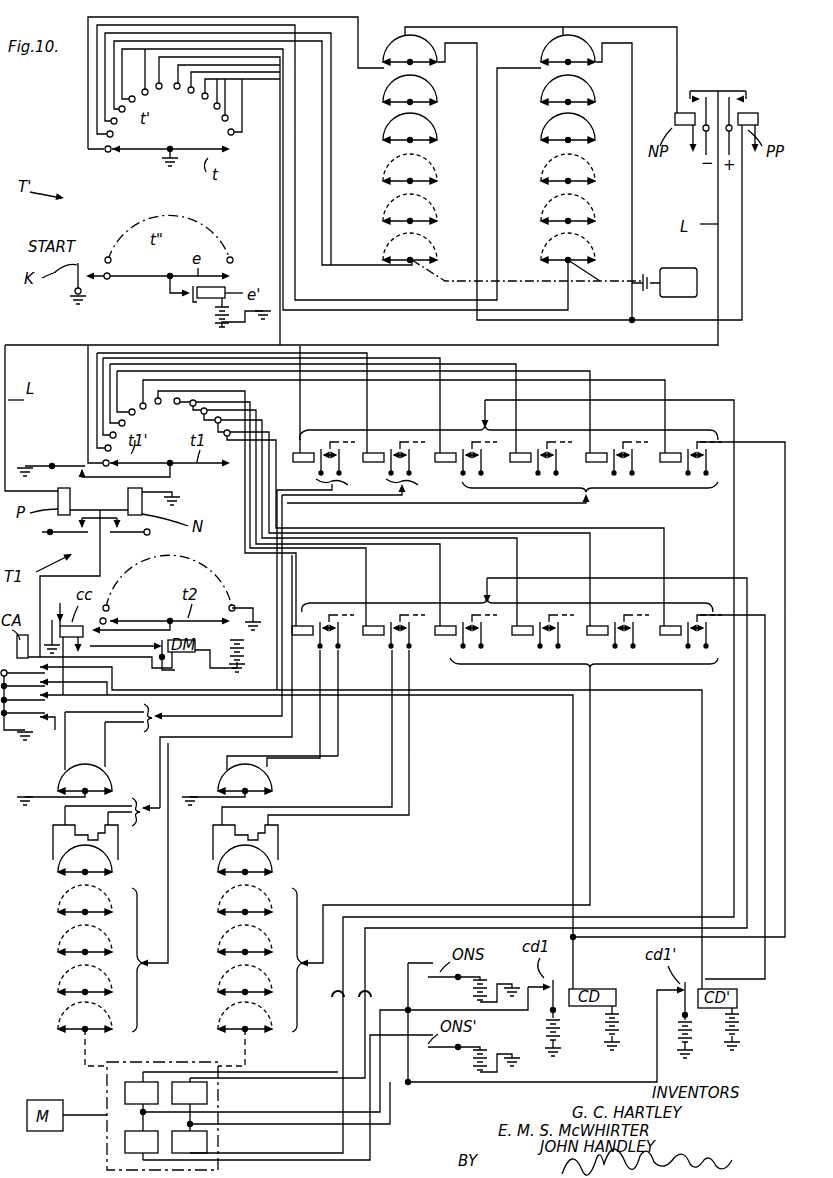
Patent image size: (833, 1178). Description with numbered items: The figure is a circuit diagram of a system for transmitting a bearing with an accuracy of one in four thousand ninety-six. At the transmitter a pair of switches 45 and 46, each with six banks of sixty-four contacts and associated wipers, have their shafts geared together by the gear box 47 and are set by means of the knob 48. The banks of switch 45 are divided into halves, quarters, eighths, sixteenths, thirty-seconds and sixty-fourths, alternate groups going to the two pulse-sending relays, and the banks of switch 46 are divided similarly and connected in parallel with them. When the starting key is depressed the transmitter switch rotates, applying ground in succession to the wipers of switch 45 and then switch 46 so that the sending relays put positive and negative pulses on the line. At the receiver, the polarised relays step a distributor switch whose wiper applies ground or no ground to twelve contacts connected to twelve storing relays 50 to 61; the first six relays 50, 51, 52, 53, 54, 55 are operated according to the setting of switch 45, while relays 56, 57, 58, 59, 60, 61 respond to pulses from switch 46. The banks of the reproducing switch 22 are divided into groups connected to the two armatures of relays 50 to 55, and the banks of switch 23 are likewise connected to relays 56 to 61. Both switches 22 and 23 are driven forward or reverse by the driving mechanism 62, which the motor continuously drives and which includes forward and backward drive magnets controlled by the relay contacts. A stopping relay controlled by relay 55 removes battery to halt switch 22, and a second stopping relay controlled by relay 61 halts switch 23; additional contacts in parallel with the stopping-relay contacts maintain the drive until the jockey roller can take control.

The switch 22 is at (54, 939).
The switch 23 is at (222, 951).
The switch 45 is at (376, 160).
The switch 46 is at (542, 172).
The gear box 47 is at (676, 270).
The knob 48 is at (646, 270).
The storing relay 50 is at (300, 462).
The storing relay 51 is at (370, 462).
The storing relay 52 is at (442, 462).
The storing relay 53 is at (517, 462).
The storing relay 54 is at (593, 462).
The storing relay 55 is at (667, 462).
The storing relay 56 is at (300, 635).
The storing relay 57 is at (370, 635).
The storing relay 58 is at (442, 635).
The storing relay 59 is at (519, 635).
The storing relay 60 is at (594, 635).
The storing relay 61 is at (667, 635).
The driving mechanism 62 is at (104, 1162).